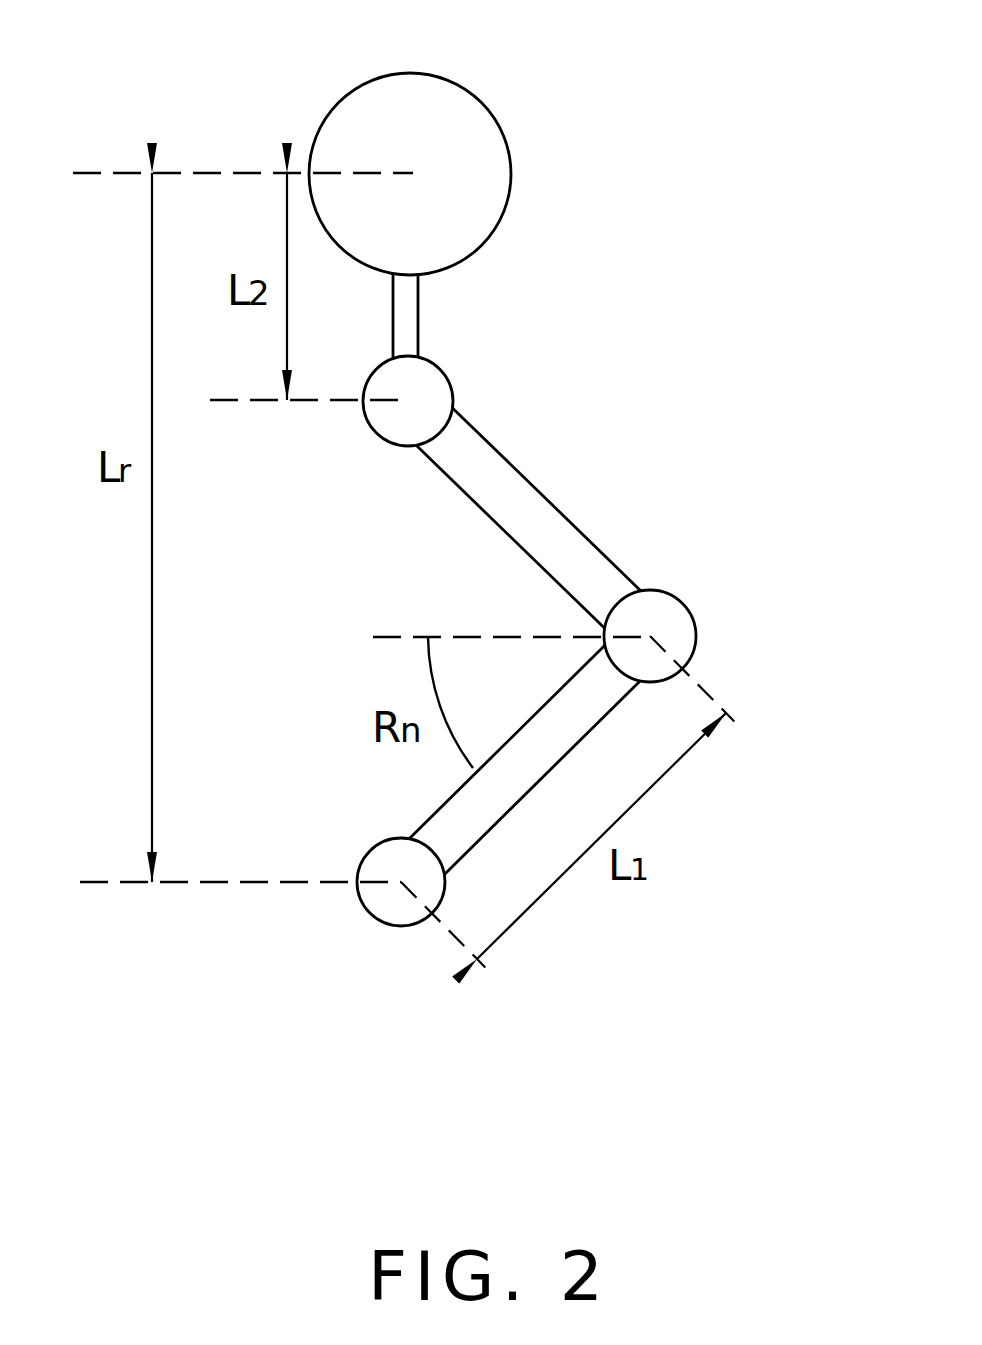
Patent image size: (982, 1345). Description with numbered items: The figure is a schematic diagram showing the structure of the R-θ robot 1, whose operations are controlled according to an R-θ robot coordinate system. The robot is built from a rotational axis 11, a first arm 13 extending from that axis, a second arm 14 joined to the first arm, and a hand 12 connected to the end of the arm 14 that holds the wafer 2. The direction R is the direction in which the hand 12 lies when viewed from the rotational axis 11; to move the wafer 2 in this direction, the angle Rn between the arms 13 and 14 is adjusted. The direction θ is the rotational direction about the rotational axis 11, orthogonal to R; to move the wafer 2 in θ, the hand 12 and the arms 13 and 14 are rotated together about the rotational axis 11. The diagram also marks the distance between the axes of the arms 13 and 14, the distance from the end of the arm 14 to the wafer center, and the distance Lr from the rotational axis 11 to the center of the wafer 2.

The R-θ robot 1 is at (770, 443).
The wafer 2 is at (457, 82).
The rotational axis 11 is at (367, 913).
The hand 12 is at (420, 318).
The arm 13 is at (510, 810).
The arm 14 is at (555, 498).